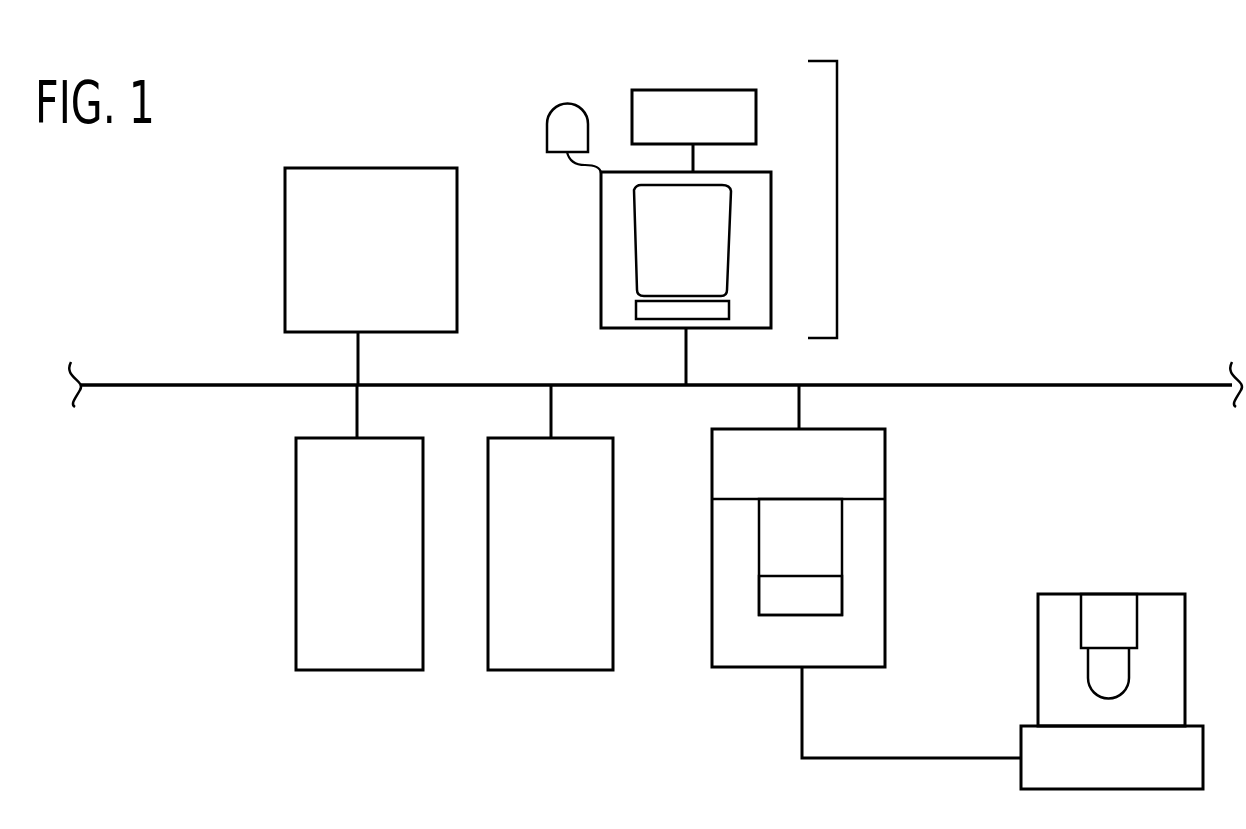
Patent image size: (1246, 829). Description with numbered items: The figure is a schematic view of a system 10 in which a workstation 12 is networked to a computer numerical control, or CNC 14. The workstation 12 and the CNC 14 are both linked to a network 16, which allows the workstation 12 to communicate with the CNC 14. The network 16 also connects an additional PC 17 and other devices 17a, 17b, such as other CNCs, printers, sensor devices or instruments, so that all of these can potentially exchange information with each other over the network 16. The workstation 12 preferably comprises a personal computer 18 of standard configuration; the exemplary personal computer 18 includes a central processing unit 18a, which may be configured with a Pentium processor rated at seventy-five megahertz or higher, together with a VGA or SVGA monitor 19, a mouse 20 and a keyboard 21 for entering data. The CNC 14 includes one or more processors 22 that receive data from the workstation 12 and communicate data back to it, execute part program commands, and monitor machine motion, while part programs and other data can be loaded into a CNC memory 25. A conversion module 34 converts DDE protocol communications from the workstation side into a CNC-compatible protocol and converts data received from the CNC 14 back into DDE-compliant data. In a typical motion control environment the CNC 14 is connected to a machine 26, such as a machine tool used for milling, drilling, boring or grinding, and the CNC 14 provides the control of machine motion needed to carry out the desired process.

The system 10 is at (895, 87).
The workstation 12 is at (837, 200).
The computer numerical control (CNC) 14 is at (912, 537).
The network 16 is at (1030, 383).
The PC 17 is at (347, 168).
The other device 17a is at (337, 672).
The other device 17b is at (510, 672).
The personal computer 18 is at (587, 235).
The central processing unit (CPU) 18a is at (660, 322).
The monitor 19 is at (730, 207).
The mouse 20 is at (553, 105).
The keyboard 21 is at (673, 88).
The processor 22 is at (842, 562).
The CNC memory 25 is at (817, 617).
The machine 26 is at (1202, 612).
The conversion module 34 is at (815, 487).